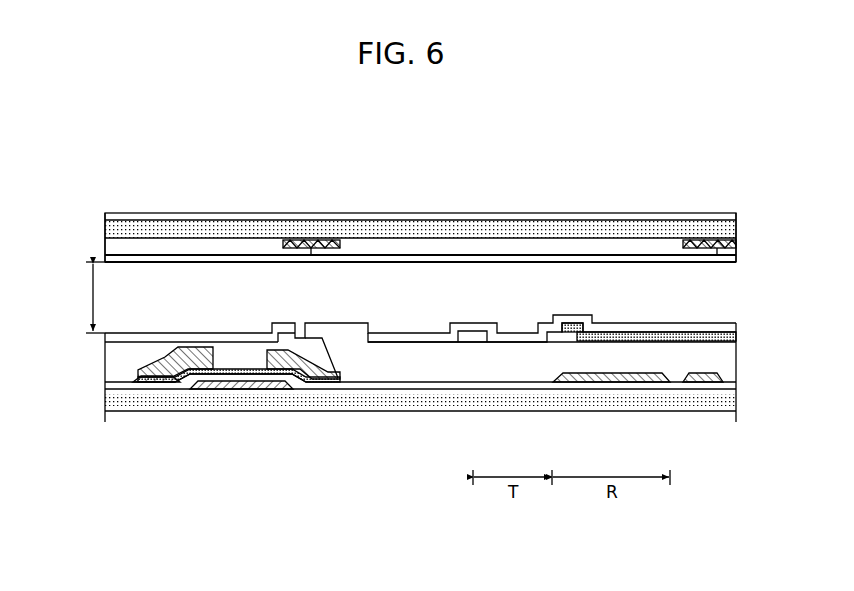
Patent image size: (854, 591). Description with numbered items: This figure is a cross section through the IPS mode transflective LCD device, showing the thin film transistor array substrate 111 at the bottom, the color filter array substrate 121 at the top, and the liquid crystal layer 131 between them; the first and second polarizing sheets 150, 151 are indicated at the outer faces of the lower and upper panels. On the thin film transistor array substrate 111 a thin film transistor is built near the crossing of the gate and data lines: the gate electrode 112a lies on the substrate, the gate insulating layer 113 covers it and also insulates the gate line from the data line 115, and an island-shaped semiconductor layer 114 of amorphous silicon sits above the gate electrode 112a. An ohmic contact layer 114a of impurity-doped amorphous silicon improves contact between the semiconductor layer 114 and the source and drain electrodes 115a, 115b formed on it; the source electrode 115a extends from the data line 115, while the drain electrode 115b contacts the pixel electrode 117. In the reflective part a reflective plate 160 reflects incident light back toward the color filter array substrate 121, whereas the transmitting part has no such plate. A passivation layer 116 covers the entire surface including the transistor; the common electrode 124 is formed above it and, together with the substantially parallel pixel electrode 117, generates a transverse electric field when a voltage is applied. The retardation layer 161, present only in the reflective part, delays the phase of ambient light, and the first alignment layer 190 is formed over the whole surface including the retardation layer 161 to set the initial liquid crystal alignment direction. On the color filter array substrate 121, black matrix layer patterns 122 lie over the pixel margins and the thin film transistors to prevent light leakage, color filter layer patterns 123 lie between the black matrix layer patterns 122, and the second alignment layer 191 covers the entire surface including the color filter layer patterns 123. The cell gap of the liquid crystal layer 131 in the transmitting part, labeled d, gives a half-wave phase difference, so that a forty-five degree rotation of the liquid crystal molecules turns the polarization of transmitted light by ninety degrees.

The thin film transistor array substrate 111 is at (518, 400).
The gate electrode 112a is at (268, 388).
The gate insulating layer 113 is at (372, 383).
The semiconductor layer 114 is at (237, 370).
The ohmic contact layer 114a is at (155, 378).
The data line 115 is at (706, 380).
The source electrode 115a is at (158, 364).
The drain electrode 115b is at (320, 378).
The passivation layer 116 is at (728, 362).
The pixel electrode 117 is at (345, 333).
The color filter array substrate 121 is at (216, 230).
The black matrix layer pattern 122 is at (311, 240).
The color filter layer pattern 123 is at (587, 248).
The common electrode 124 is at (473, 333).
The liquid crystal layer 131 is at (723, 288).
The first polarizing sheet 150 is at (110, 412).
The second polarizing sheet 151 is at (112, 216).
The reflective plate 160 is at (627, 382).
The retardation layer 161 is at (625, 333).
The first alignment layer 190 is at (718, 325).
The second alignment layer 191 is at (728, 260).